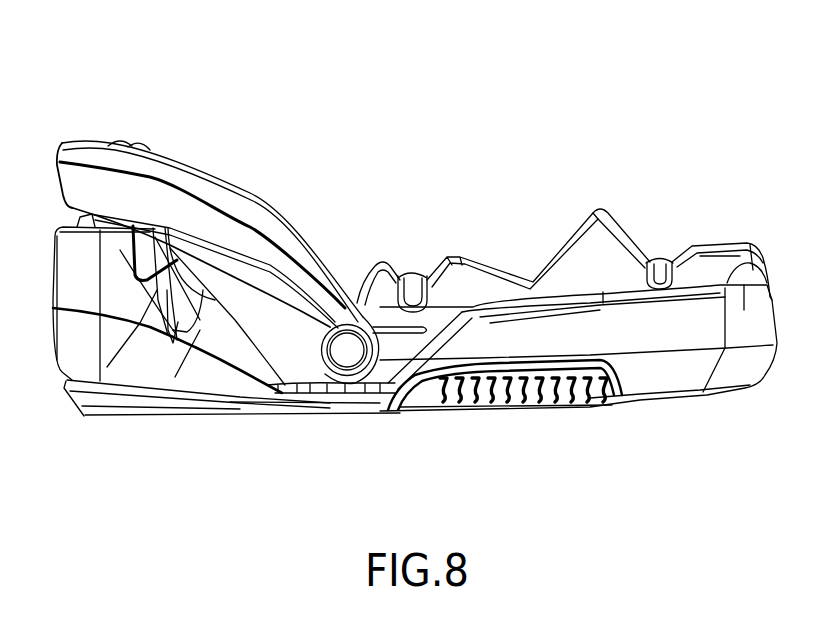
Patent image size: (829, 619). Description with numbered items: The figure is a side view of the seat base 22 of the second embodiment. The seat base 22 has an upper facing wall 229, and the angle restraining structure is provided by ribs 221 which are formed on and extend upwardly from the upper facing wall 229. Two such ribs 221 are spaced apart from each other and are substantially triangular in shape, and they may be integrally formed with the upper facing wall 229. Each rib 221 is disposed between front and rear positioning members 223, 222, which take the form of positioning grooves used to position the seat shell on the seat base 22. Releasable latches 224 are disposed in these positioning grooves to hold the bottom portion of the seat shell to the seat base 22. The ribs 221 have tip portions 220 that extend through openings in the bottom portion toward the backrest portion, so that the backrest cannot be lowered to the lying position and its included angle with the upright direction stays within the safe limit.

The seat base 22 is at (74, 57).
The tip portion 220 is at (531, 196).
The rib 221 is at (603, 208).
The rear positioning member 222 is at (670, 252).
The front positioning member 223 is at (400, 268).
The releasable latch 224 is at (413, 280).
The upper facing wall 229 is at (570, 300).